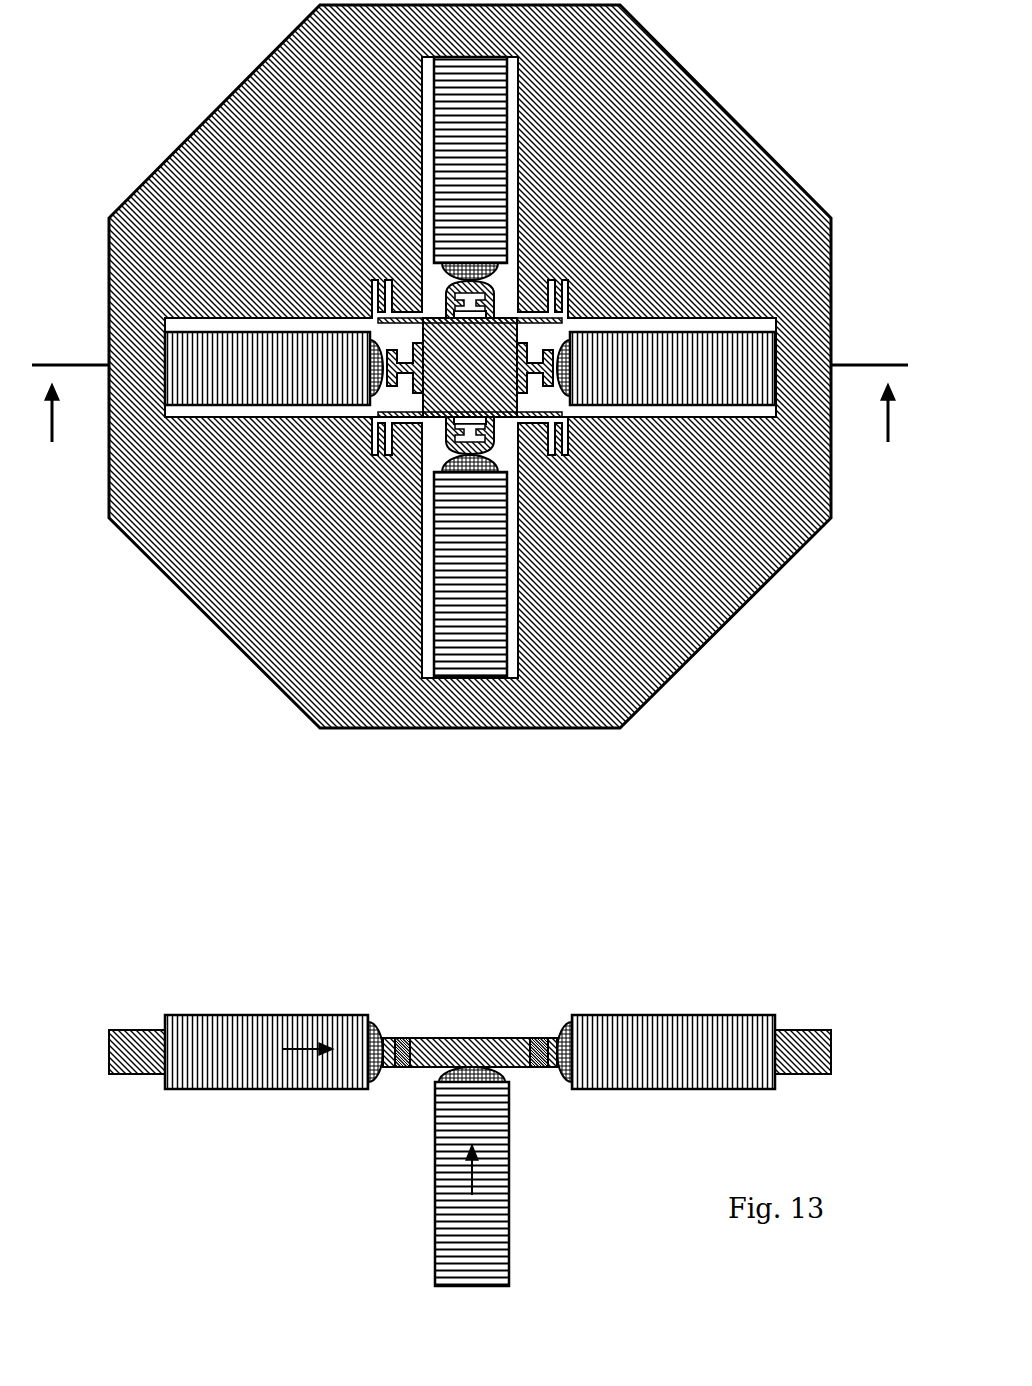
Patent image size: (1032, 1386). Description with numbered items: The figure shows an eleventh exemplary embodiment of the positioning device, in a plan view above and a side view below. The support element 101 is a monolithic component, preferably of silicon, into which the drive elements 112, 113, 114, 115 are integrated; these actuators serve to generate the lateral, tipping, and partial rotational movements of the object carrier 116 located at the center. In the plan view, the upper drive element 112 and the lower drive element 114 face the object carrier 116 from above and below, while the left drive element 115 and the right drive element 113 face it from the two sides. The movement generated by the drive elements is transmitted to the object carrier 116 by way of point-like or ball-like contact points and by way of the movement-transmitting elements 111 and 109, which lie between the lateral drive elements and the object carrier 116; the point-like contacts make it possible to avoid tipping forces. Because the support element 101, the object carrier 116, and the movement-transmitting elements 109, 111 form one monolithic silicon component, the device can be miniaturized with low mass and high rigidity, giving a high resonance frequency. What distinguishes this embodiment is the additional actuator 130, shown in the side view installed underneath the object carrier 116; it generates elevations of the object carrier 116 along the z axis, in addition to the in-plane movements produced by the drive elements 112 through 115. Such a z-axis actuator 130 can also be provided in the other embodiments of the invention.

The support element 101 is at (133, 389).
The movement-transmitting element 109 is at (550, 378).
The movement-transmitting element 111 is at (391, 371).
The drive element 112 is at (470, 172).
The drive element 113 is at (655, 365).
The drive element 114 is at (474, 590).
The drive element 115 is at (234, 374).
The object carrier 116 is at (477, 388).
The actuator 130 is at (464, 1233).